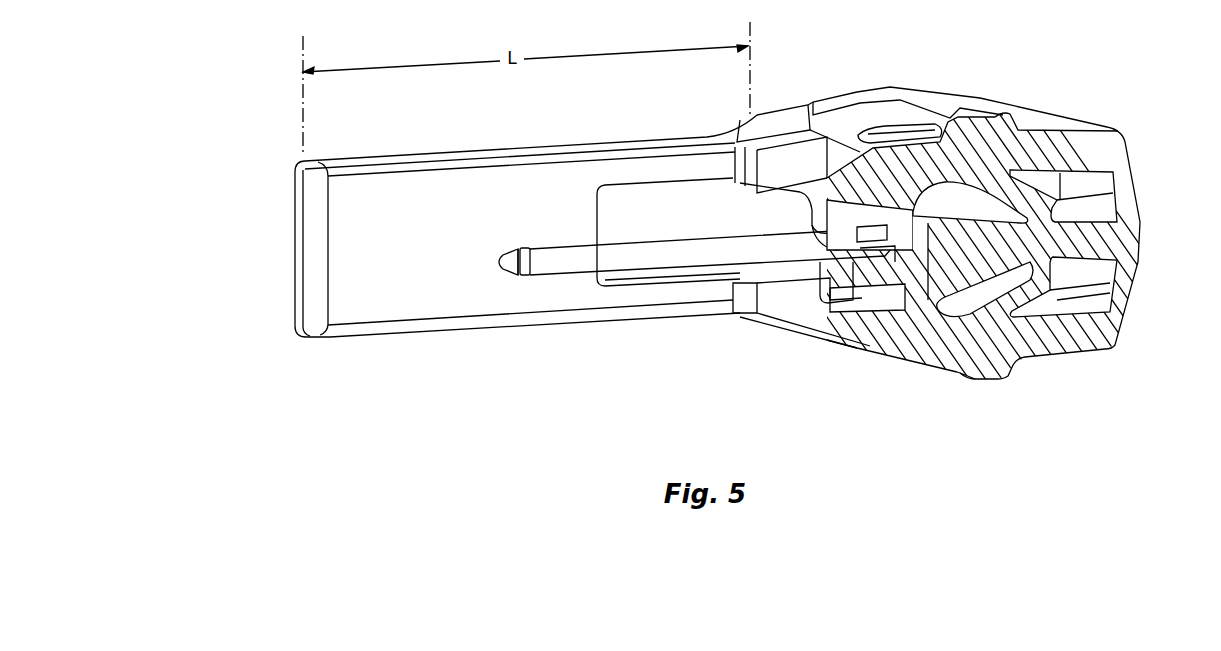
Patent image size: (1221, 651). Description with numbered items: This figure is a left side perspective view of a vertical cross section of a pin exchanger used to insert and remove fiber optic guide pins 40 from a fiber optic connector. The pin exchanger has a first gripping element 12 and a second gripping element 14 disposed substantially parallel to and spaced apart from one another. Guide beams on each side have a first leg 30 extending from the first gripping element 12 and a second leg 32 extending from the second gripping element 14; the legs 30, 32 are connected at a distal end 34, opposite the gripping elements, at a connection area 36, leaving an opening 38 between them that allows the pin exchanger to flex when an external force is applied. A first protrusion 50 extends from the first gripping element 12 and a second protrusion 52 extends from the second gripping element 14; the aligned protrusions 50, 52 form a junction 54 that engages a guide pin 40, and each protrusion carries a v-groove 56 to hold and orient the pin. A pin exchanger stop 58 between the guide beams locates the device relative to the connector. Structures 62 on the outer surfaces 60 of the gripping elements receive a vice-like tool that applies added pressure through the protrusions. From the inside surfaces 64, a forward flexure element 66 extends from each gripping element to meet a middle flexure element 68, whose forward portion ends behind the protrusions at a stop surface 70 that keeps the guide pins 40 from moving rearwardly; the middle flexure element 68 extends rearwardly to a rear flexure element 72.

The first gripping element 12 is at (1065, 108).
The second gripping element 14 is at (1123, 355).
The first leg 30 is at (638, 137).
The second leg 32 is at (655, 318).
The distal end 34 is at (270, 258).
The connection area 36 is at (380, 259).
The opening 38 is at (658, 216).
The fiber optic guide pin 40 is at (500, 272).
The first protrusion 50 is at (813, 218).
The second protrusion 52 is at (842, 300).
The junction 54 is at (893, 246).
The v-groove 56 is at (808, 214).
The pin exchanger stop 58 is at (770, 165).
The outer surface 60 is at (1003, 103).
The structure 62 is at (862, 94).
The inside surface 64 is at (1105, 168).
The forward flexure element 66 is at (1057, 200).
The middle flexure element 68 is at (1103, 240).
The stop surface 70 is at (920, 250).
The rear flexure element 72 is at (1133, 313).